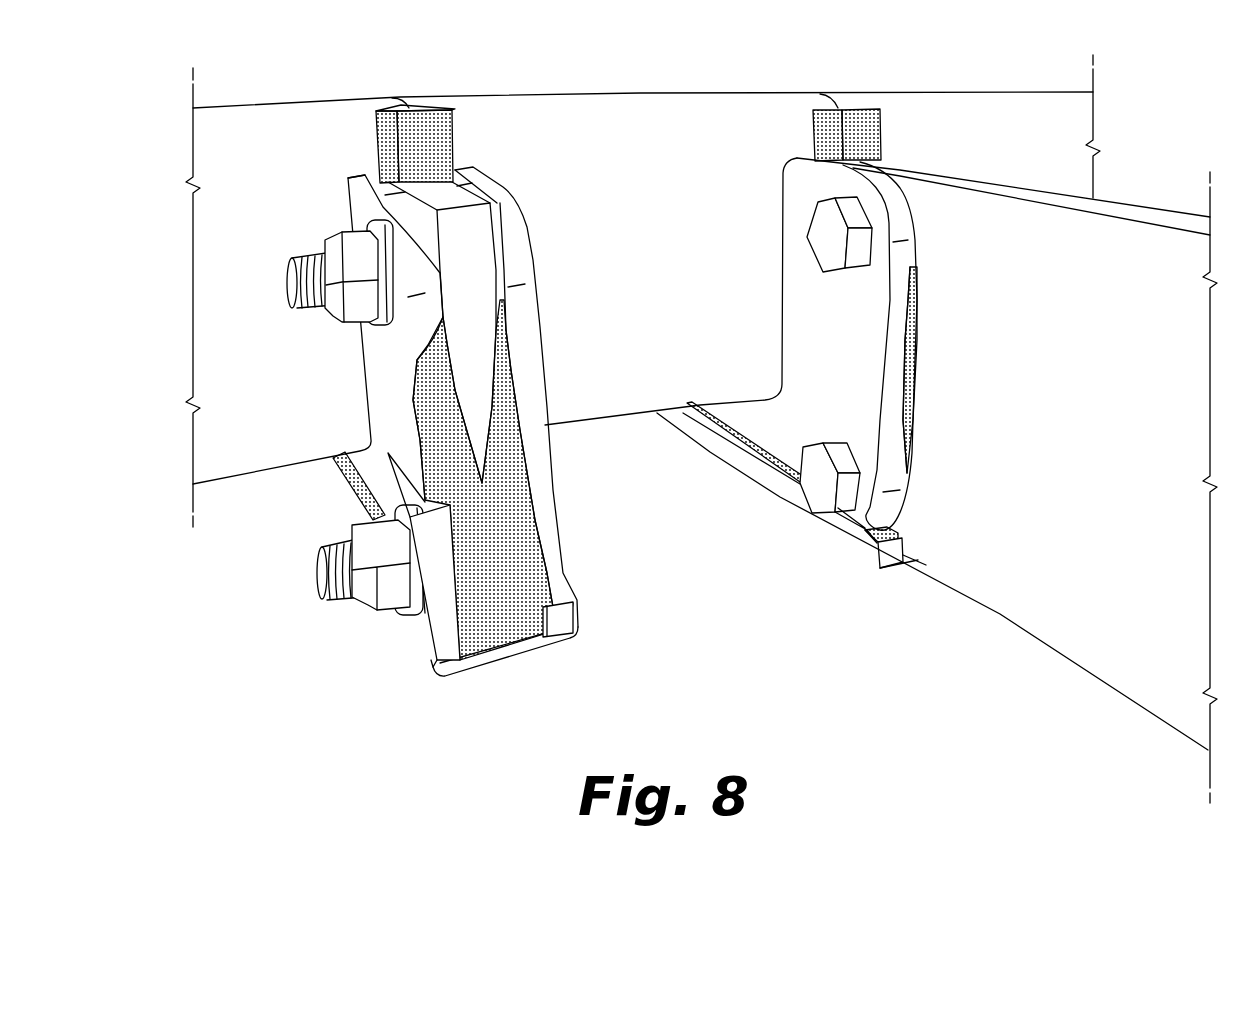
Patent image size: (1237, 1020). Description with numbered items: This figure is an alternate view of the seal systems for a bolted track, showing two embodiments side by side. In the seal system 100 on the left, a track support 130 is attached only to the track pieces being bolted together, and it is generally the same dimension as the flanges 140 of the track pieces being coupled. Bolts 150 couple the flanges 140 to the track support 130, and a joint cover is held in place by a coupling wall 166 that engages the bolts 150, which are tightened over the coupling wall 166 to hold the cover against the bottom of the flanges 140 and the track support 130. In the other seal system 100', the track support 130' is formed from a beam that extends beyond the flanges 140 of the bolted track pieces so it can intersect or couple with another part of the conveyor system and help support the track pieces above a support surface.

The seal system 100 is at (643, 387).
The seal system 100' is at (1007, 148).
The track support 130 is at (489, 421).
The track support 130' is at (932, 456).
The flange 140 is at (507, 203).
The bolt 150 is at (382, 537).
The coupling wall 166 is at (427, 625).